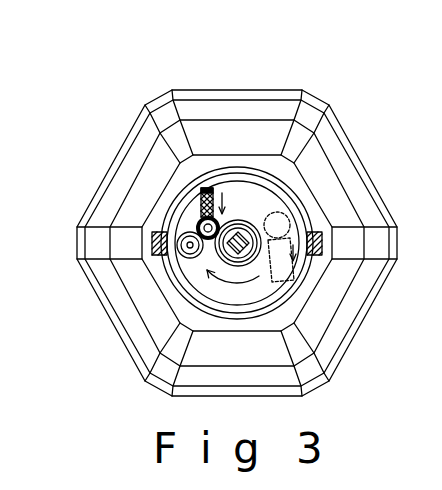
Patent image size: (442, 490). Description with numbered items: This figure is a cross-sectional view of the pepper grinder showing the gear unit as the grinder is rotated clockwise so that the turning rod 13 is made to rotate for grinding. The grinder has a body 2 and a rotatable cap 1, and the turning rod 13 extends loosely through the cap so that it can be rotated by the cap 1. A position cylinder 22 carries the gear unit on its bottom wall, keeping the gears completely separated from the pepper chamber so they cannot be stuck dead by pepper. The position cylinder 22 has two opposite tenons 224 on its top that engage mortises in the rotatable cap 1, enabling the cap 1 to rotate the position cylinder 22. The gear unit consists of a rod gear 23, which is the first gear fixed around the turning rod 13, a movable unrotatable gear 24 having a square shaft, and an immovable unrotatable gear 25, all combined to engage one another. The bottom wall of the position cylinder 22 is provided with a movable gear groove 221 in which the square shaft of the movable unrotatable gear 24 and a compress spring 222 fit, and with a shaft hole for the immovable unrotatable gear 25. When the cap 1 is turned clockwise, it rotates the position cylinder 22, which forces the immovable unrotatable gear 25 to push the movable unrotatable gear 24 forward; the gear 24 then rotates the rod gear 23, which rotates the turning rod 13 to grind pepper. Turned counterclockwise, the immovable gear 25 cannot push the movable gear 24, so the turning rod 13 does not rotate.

The rotatable cap 1 is at (281, 267).
The body 2 is at (237, 229).
The turning rod 13 is at (240, 221).
The position cylinder 22 is at (292, 221).
The movable gear groove 221 is at (207, 188).
The compress spring 222 is at (198, 220).
The tenons 224 is at (152, 238).
The rod gear 23 is at (262, 202).
The movable unrotatable gear 24 is at (180, 236).
The immovable unrotatable gear 25 is at (179, 249).